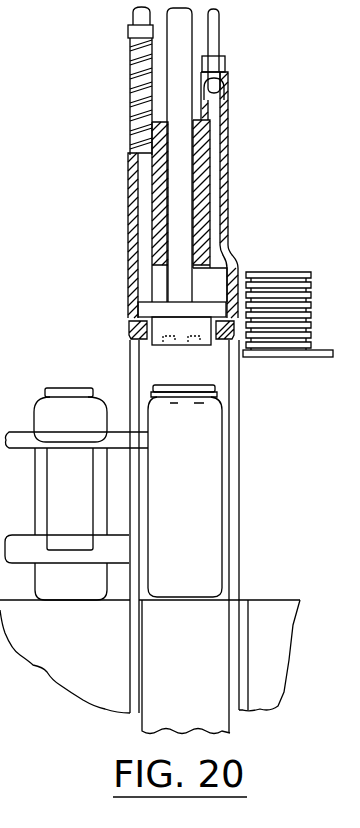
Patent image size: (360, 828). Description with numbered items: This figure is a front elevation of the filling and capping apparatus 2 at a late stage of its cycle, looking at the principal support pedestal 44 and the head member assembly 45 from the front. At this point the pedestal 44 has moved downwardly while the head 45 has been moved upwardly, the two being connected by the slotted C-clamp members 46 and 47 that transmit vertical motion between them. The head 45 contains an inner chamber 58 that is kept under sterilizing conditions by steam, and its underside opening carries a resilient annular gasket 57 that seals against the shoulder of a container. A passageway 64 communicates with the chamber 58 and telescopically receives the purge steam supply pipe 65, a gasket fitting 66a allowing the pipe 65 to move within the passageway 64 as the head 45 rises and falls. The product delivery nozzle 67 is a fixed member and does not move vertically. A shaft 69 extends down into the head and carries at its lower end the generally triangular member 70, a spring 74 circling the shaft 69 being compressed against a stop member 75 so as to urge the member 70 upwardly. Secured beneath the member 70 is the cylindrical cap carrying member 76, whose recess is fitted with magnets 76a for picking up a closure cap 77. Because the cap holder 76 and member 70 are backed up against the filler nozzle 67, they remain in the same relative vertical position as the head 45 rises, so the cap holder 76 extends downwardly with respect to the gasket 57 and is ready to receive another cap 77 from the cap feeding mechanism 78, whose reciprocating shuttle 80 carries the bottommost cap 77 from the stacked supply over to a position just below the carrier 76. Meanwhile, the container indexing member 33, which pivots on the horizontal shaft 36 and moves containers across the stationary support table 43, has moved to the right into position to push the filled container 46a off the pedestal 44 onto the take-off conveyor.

The apparatus 2 is at (3, 712).
The container indexing member 33 is at (80, 487).
The horizontal shaft 36 is at (39, 564).
The stationary support table 43 is at (86, 664).
The principal support pedestal 44 is at (200, 652).
The head member assembly 45 is at (248, 236).
The slotted C-clamp member 46 is at (131, 361).
The filled container 46a is at (188, 445).
The slotted C-clamp member 47 is at (238, 388).
The resilient gasket 57 is at (130, 348).
The inner chamber 58 is at (207, 287).
The passageway 64 is at (221, 213).
The purge steam supply pipe 65 is at (215, 31).
The gasket fitting 66a is at (226, 68).
The product delivery nozzle member 67 is at (190, 166).
The shaft 69 is at (143, 199).
The generally triangular shaped member 70 is at (216, 302).
The spring 74 is at (130, 95).
The stop member 75 is at (128, 26).
The cap carrying member 76 is at (192, 338).
The magnets 76a is at (175, 348).
The closure cap 77 is at (283, 275).
The cap feeding mechanism 78 is at (331, 333).
The reciprocating slide plate or shuttle 80 is at (318, 357).